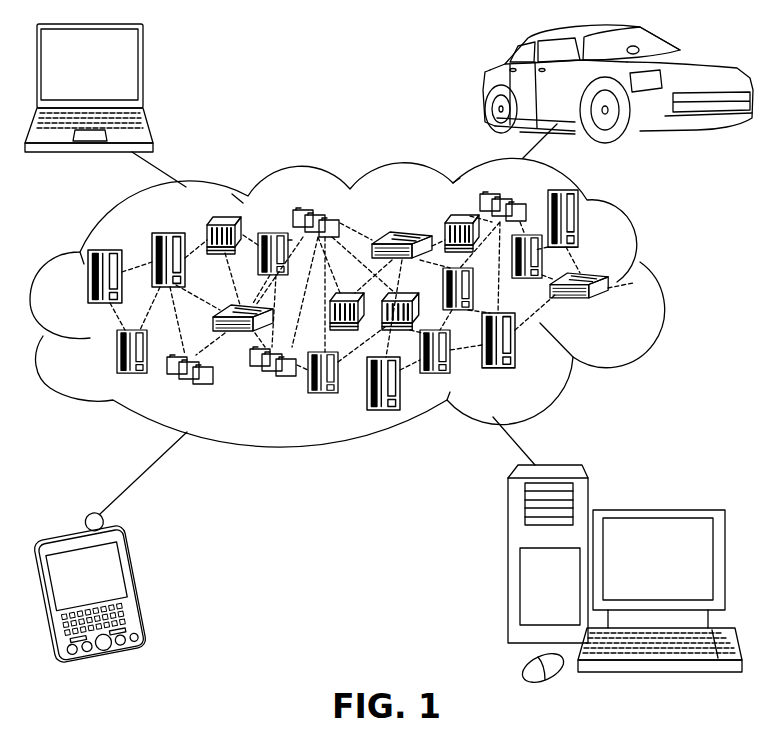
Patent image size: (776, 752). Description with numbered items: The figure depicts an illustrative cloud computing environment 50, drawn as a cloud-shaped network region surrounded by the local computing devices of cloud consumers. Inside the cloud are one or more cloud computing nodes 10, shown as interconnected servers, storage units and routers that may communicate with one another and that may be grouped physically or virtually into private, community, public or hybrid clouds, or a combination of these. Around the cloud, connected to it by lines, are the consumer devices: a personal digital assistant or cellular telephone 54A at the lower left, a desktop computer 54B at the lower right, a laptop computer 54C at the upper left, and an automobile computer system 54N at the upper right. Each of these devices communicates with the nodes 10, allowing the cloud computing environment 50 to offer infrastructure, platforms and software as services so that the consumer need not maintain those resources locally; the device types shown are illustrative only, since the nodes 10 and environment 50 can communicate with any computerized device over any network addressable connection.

The cloud computing nodes 10 is at (611, 307).
The cloud computing environment 50 is at (655, 283).
The personal digital assistant (PDA) or cellular telephone 54A is at (136, 588).
The desktop computer 54B is at (657, 511).
The laptop computer 54C is at (145, 73).
The automobile computer system 54N is at (487, 82).